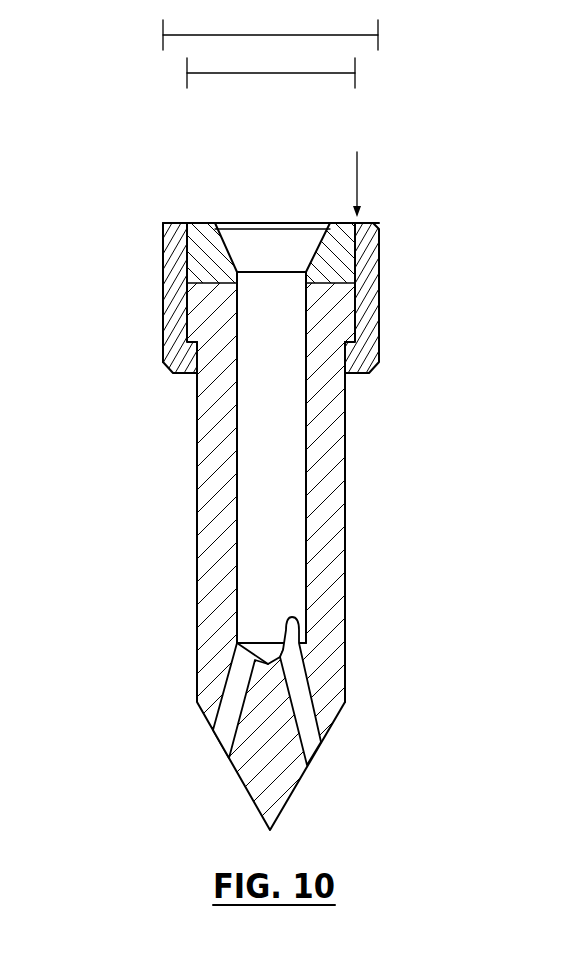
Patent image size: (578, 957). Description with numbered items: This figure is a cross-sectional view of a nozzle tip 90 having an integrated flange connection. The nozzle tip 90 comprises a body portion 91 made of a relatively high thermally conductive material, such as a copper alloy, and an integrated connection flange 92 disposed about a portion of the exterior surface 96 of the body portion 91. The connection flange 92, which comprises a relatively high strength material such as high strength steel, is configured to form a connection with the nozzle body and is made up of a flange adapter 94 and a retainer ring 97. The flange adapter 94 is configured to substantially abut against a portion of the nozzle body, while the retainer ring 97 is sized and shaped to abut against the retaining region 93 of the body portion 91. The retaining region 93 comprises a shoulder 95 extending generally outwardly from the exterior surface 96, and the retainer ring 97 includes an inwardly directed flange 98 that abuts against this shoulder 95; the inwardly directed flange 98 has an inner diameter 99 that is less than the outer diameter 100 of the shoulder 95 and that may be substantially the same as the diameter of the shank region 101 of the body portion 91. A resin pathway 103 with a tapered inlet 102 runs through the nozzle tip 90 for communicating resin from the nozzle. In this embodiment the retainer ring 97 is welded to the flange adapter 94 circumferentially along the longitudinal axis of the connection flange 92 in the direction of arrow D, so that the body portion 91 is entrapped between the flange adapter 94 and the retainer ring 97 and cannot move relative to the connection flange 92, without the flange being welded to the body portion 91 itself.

The nozzle tip 90 is at (505, 265).
The body portion 91 is at (289, 506).
The integrated connection flange 92 is at (255, 298).
The retaining region 93 is at (341, 333).
The flange adapter 94 is at (193, 223).
The shoulder 95 is at (168, 362).
The exterior surface 96 is at (356, 510).
The retainer ring 97 is at (162, 327).
The inwardly directed flange 98 is at (352, 377).
The inner diameter 99 is at (202, 75).
The outer diameter 100 is at (357, 36).
The shank region 101 is at (472, 345).
The tapered inlet 102 is at (230, 243).
The resin pathway 103 is at (293, 197).
The arrow D is at (357, 173).